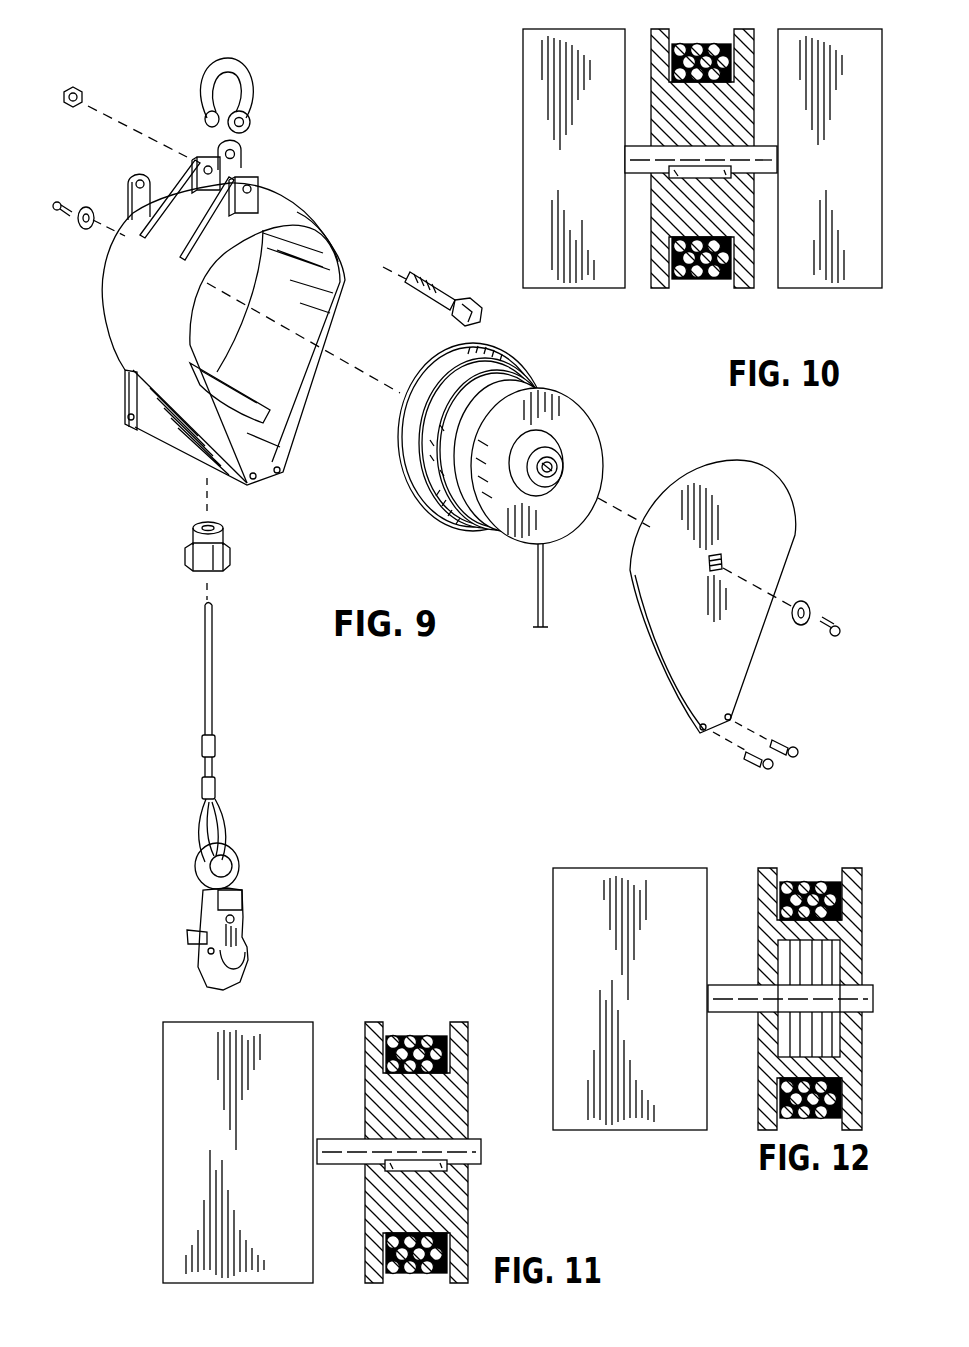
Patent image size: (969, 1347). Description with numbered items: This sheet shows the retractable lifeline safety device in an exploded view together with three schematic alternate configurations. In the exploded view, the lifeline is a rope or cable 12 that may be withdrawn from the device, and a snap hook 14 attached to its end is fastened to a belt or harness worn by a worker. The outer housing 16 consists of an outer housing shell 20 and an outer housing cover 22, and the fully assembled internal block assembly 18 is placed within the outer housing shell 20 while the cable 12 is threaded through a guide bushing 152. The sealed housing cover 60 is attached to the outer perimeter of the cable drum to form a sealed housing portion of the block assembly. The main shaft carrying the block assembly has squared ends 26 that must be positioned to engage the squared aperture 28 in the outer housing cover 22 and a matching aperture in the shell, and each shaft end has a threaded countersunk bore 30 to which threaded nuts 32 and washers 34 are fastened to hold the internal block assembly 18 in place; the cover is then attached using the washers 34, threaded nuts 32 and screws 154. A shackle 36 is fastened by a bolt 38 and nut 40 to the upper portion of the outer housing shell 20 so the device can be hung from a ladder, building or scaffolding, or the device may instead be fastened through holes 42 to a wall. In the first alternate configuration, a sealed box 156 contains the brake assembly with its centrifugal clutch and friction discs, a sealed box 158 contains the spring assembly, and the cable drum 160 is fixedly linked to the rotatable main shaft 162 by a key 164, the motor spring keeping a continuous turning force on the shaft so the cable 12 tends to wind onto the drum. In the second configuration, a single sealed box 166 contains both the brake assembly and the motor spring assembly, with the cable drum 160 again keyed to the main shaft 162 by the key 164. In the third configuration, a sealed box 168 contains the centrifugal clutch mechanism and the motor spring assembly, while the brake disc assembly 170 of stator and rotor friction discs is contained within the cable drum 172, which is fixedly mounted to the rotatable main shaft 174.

In FIG. 9, the cable 12 is at (537, 590).
In FIG. 10, the cable 12 is at (700, 284).
In FIG. 11, the cable 12 is at (423, 1032).
In FIG. 12, the cable 12 is at (818, 885).
In FIG. 9, the snap hook 14 is at (252, 892).
In FIG. 9, the outer housing 16 is at (330, 210).
In FIG. 9, the internal block assembly 18 is at (584, 372).
In FIG. 9, the outer housing shell 20 is at (113, 316).
In FIG. 9, the outer housing cover 22 is at (742, 670).
In FIG. 9, the squared ends 26 is at (555, 452).
In FIG. 9, the squared aperture 28 is at (722, 556).
In FIG. 9, the threaded countersunk bore 30 is at (560, 470).
In FIG. 9, the threaded nuts 32 is at (58, 212).
In FIG. 9, the washers 34 is at (92, 208).
In FIG. 9, the shackle 36 is at (250, 82).
In FIG. 9, the bolt 38 is at (444, 290).
In FIG. 9, the nut 40 is at (84, 91).
In FIG. 9, the holes 42 is at (142, 172).
In FIG. 9, the sealed housing cover 60 is at (560, 512).
In FIG. 9, the guide bushing 152 is at (222, 566).
In FIG. 9, the screws 154 is at (798, 752).
In FIG. 10, the sealed box 156 is at (603, 285).
In FIG. 10, the sealed box 158 is at (802, 282).
In FIG. 10, the cable drum 160 is at (740, 284).
In FIG. 11, the cable drum 160 is at (465, 1047).
In FIG. 10, the rotatable main shaft 162 is at (770, 152).
In FIG. 11, the rotatable main shaft 162 is at (472, 1142).
In FIG. 10, the key 164 is at (680, 178).
In FIG. 11, the key 164 is at (440, 1172).
In FIG. 11, the sealed box 166 is at (293, 1032).
In FIG. 12, the sealed box 168 is at (673, 875).
In FIG. 12, the brake disc assembly 170 is at (795, 1037).
In FIG. 12, the cable drum 172 is at (850, 872).
In FIG. 12, the rotatable main shaft 174 is at (737, 993).